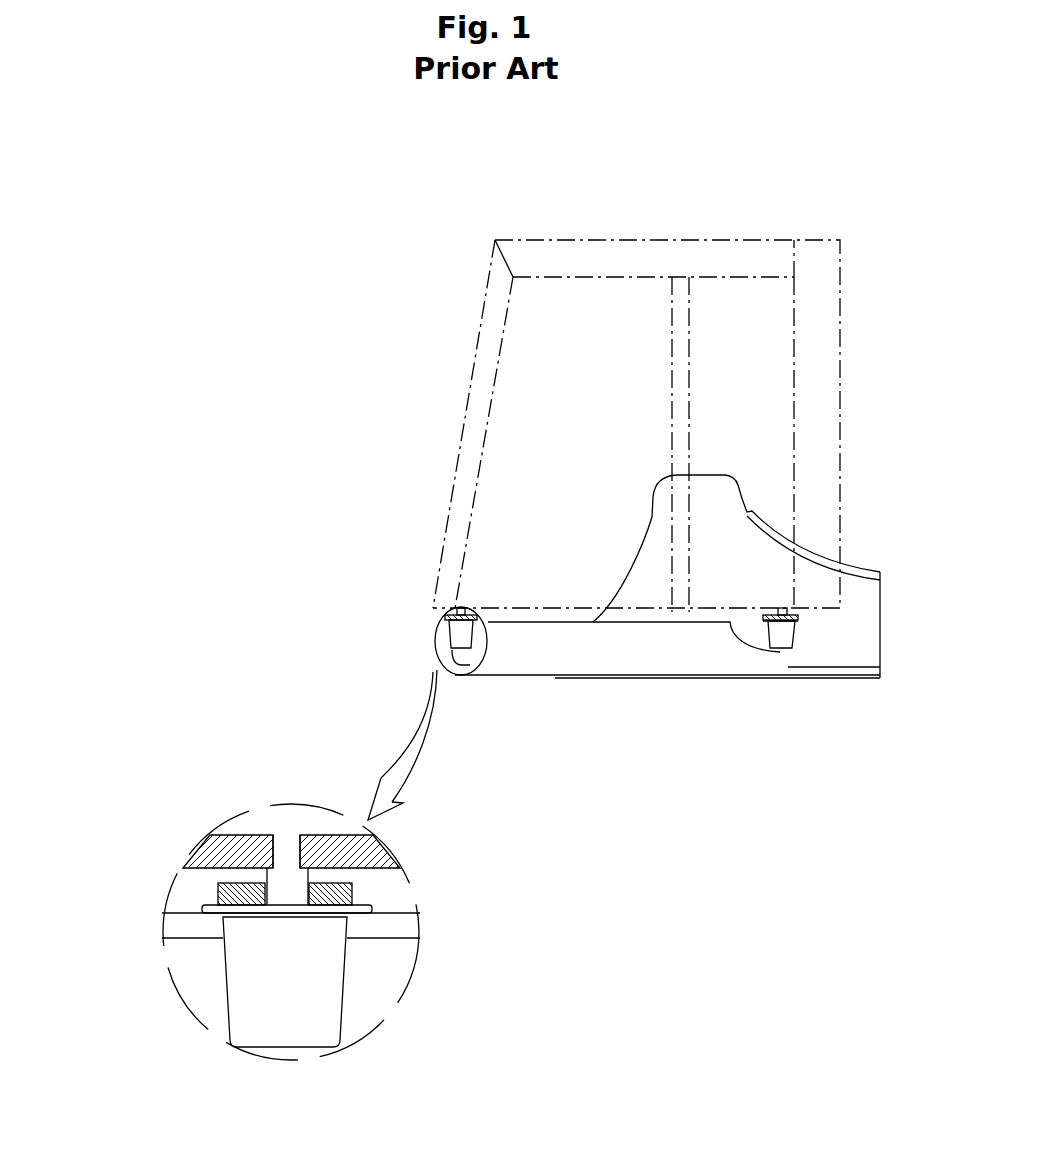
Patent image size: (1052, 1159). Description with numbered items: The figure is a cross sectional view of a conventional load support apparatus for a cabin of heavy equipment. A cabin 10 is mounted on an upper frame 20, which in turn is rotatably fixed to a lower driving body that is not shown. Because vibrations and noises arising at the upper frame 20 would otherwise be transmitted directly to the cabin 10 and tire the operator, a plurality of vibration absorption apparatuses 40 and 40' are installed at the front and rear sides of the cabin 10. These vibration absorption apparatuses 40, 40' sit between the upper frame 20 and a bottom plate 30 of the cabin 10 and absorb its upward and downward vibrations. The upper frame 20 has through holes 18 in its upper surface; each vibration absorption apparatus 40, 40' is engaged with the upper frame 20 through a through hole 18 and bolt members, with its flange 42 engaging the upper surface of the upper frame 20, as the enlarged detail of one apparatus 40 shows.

The cabin 10 is at (737, 224).
The upper frame 20 is at (506, 688).
The bottom plate 30 is at (557, 608).
The vibration absorption apparatus 40 is at (352, 756).
The vibration absorption apparatus 40' is at (777, 671).
The flange 42 is at (200, 901).
The through hole 18 is at (218, 927).